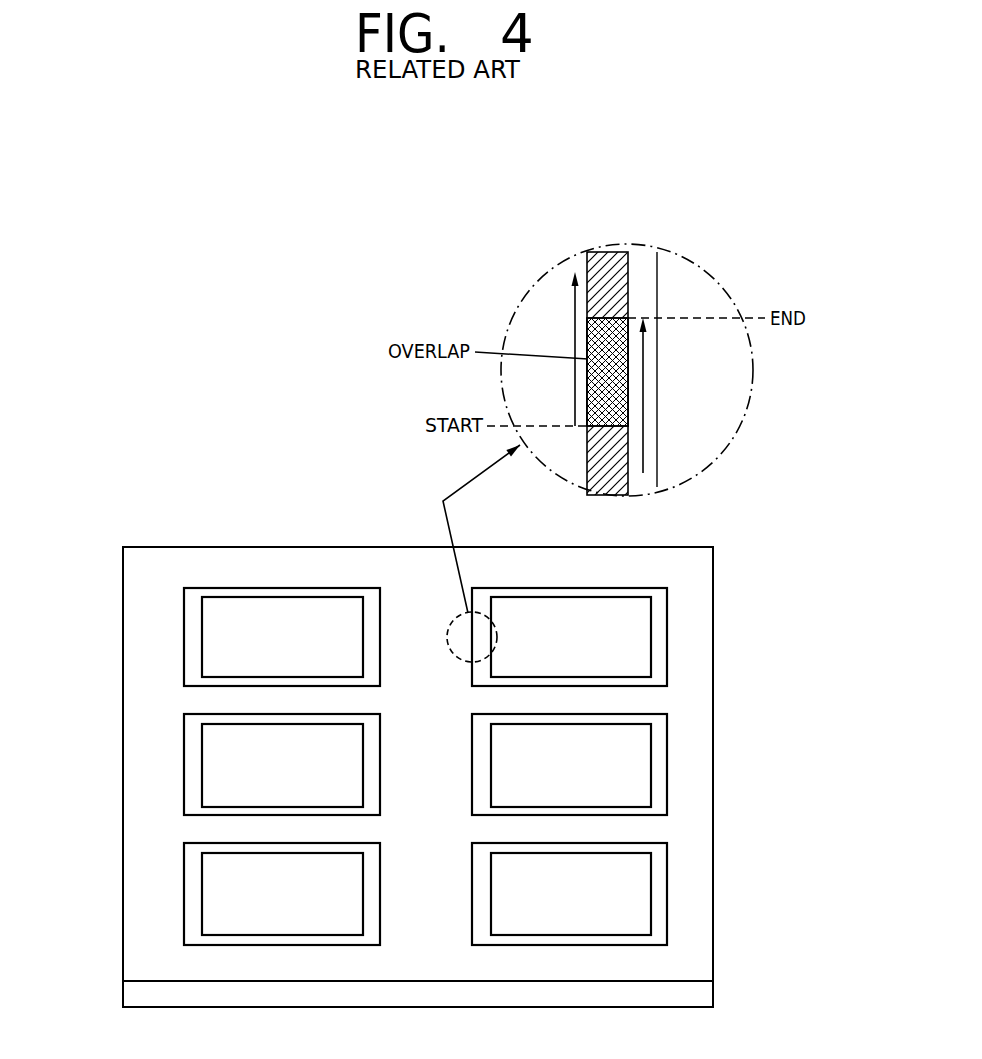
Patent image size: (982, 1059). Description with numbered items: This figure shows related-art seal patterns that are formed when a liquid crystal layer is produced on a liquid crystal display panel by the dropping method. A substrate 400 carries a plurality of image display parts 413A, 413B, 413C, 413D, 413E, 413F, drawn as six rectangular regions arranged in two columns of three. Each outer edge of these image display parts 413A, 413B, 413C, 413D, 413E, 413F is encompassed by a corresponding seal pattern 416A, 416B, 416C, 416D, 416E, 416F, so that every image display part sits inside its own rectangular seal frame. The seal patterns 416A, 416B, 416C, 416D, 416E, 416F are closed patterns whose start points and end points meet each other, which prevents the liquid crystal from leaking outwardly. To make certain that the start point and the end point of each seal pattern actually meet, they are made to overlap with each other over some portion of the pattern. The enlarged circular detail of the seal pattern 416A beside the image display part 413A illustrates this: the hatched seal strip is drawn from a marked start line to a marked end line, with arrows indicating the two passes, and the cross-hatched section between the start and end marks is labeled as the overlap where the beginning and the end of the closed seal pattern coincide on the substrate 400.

The substrate 400 is at (697, 995).
The image display part 413A is at (599, 651).
The image display part 413B is at (599, 778).
The image display part 413C is at (599, 906).
The image display part 413D is at (320, 651).
The image display part 413E is at (320, 778).
The image display part 413F is at (320, 906).
The seal pattern 416A is at (667, 636).
The seal pattern 416B is at (667, 762).
The seal pattern 416C is at (667, 892).
The seal pattern 416D is at (184, 637).
The seal pattern 416E is at (184, 765).
The seal pattern 416F is at (184, 895).